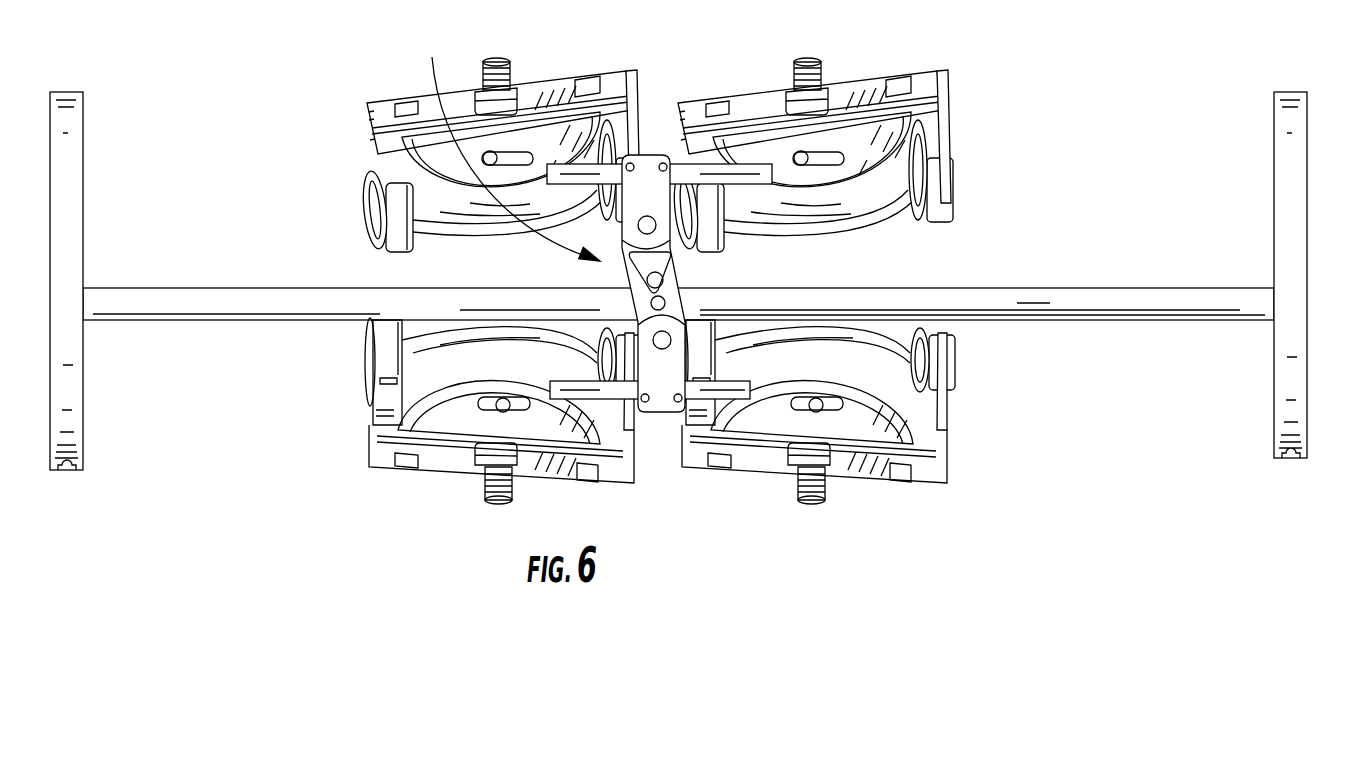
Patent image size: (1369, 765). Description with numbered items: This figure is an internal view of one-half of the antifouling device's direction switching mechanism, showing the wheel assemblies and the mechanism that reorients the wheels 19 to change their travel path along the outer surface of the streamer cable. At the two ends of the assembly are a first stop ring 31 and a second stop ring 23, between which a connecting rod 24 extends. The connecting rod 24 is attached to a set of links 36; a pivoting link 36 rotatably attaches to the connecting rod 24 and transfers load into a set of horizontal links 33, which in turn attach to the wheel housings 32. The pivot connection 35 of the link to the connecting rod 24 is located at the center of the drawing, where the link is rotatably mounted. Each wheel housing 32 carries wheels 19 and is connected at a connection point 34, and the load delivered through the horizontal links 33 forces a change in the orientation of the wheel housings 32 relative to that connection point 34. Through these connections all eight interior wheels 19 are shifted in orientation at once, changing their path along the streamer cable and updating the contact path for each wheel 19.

The wheels 19 is at (467, 213).
The second stop ring 23 is at (1291, 410).
The connecting rod 24 is at (1002, 303).
The first stop ring 31 is at (72, 392).
The wheel housings 32 is at (863, 85).
The horizontal links 33 is at (703, 390).
The connection point 34 is at (810, 63).
The pivot link 35 is at (659, 270).
The pivoting link 36 is at (509, 145).